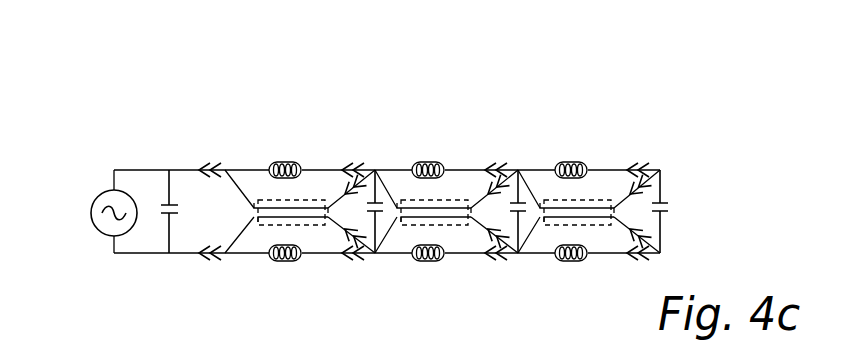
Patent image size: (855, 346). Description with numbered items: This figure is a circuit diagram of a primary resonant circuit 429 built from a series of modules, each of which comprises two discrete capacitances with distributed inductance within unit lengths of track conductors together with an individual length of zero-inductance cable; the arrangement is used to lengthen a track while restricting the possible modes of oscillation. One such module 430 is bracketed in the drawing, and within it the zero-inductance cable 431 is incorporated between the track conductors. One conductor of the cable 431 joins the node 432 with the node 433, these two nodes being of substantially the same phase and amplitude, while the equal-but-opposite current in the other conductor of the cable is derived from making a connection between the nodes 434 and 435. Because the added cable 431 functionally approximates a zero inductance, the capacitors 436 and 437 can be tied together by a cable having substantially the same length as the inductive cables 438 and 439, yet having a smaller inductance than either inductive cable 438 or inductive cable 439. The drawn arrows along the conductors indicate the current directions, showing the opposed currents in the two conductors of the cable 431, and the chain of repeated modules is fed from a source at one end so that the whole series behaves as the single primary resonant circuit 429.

The primary resonant circuit 429 is at (668, 68).
The module 430 is at (522, 120).
The zero-inductance cable 431 is at (398, 207).
The node 432 is at (376, 170).
The node 433 is at (567, 276).
The node 434 is at (519, 169).
The node 435 is at (377, 258).
The capacitor 436 is at (327, 213).
The capacitor 437 is at (523, 218).
The inductive cable 438 is at (478, 144).
The inductive cable 439 is at (466, 292).